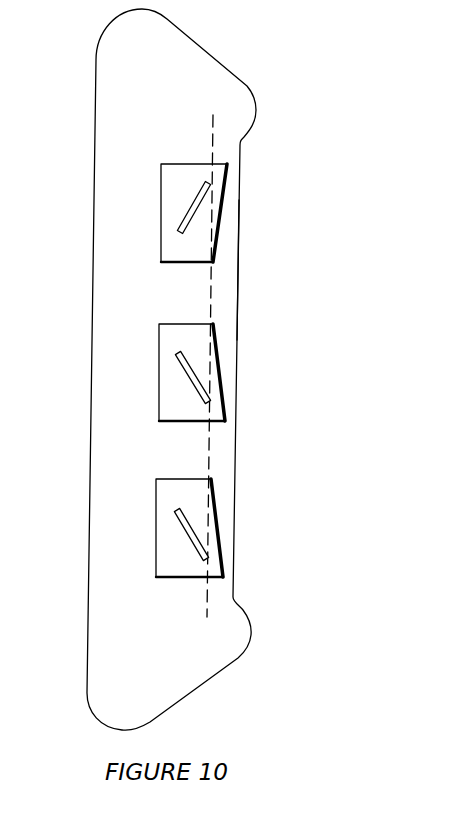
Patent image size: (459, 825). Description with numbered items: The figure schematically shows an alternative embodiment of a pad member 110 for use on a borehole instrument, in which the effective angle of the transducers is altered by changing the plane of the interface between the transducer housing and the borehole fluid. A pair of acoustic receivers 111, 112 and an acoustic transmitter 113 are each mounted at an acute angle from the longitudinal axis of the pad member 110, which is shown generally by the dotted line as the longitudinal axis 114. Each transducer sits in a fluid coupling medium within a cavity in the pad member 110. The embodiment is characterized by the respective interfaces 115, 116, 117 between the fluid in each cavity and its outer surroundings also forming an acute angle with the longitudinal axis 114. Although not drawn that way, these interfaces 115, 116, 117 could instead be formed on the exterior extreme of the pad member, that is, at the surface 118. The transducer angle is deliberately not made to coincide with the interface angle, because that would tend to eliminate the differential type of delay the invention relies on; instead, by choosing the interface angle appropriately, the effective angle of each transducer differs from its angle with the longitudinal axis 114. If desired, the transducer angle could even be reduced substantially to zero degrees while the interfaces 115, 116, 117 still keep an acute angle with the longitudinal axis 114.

The pad member 110 is at (196, 43).
The acoustic receiver 111 is at (190, 540).
The acoustic receiver 112 is at (192, 383).
The acoustic transmitter 113 is at (190, 208).
The longitudinal axis 114 is at (207, 612).
The interface 115 is at (227, 184).
The interface 116 is at (221, 358).
The interface 117 is at (216, 499).
The surface 118 is at (239, 271).